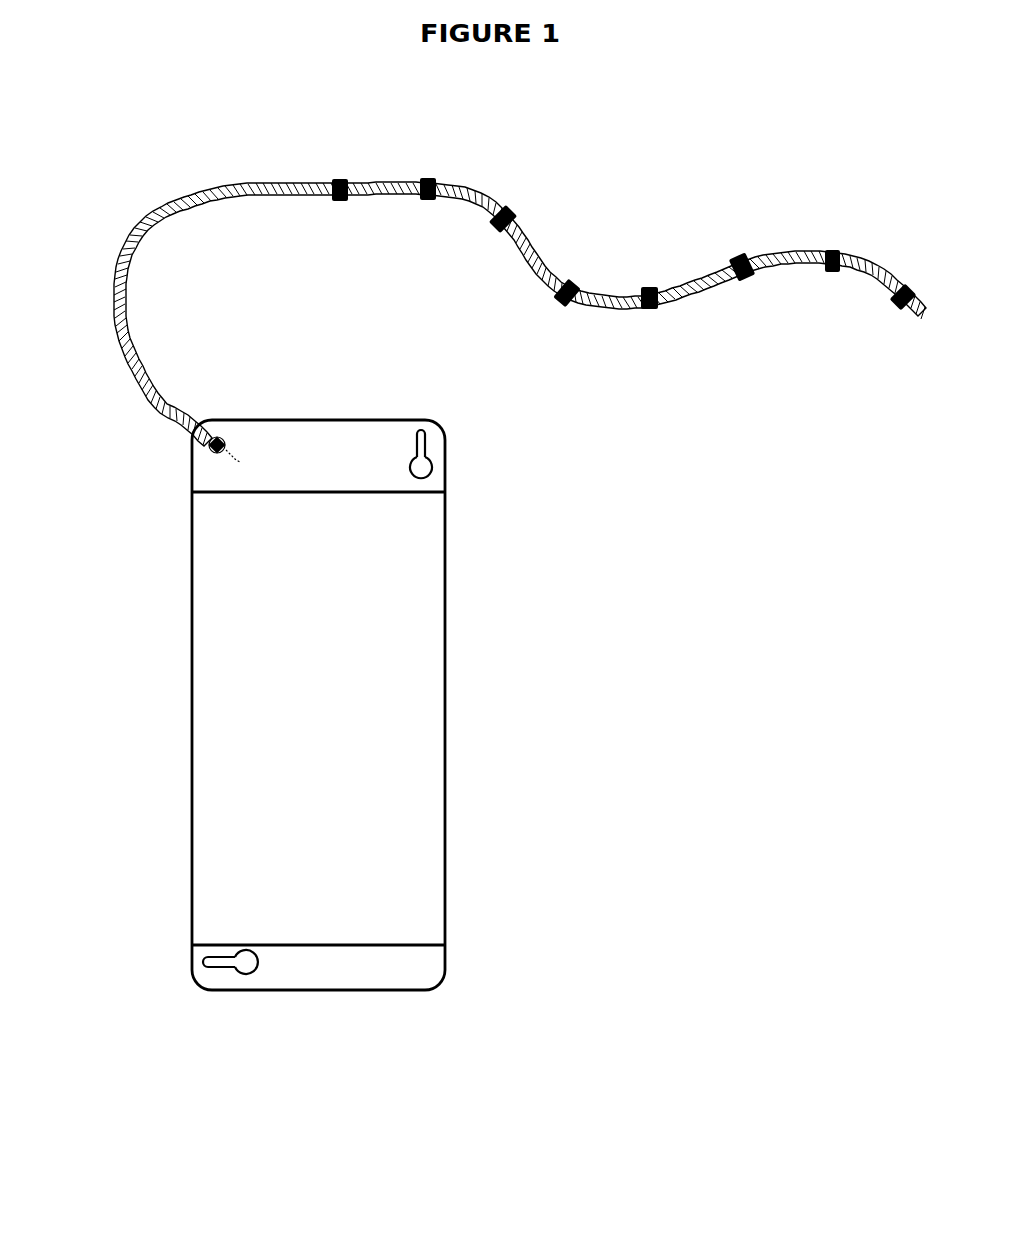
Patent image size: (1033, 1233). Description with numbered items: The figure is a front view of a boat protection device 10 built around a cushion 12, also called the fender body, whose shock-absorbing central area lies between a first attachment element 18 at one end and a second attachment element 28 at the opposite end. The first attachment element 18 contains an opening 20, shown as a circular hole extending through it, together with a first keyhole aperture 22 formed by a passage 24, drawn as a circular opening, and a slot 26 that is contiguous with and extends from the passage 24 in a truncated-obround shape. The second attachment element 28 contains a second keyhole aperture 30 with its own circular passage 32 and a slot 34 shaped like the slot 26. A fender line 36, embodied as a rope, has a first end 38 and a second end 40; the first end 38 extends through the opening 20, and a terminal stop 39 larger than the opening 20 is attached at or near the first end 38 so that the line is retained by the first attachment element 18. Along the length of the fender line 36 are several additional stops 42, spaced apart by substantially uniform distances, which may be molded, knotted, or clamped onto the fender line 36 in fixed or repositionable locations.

The boat protection device 10 is at (655, 933).
The cushion 12 is at (273, 712).
The first attachment element 18 is at (242, 482).
The opening 20 is at (219, 440).
The first keyhole aperture 22 is at (416, 425).
The passage 24 is at (432, 468).
The slot 26 is at (459, 403).
The second attachment element 28 is at (372, 975).
The second keyhole aperture 30 is at (255, 1025).
The passage 32 is at (250, 975).
The slot 34 is at (205, 961).
The fender line 36 is at (192, 212).
The first end 38 is at (236, 450).
The terminal stop 39 is at (208, 445).
The second end 40 is at (913, 314).
The stops 42 is at (832, 255).